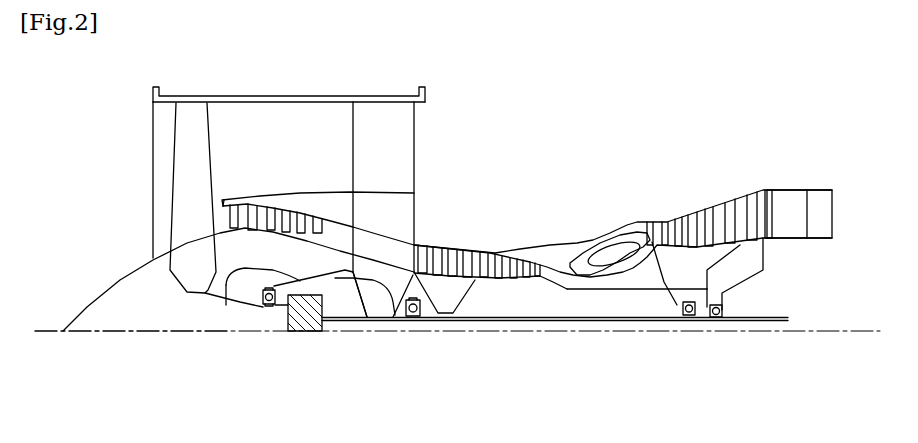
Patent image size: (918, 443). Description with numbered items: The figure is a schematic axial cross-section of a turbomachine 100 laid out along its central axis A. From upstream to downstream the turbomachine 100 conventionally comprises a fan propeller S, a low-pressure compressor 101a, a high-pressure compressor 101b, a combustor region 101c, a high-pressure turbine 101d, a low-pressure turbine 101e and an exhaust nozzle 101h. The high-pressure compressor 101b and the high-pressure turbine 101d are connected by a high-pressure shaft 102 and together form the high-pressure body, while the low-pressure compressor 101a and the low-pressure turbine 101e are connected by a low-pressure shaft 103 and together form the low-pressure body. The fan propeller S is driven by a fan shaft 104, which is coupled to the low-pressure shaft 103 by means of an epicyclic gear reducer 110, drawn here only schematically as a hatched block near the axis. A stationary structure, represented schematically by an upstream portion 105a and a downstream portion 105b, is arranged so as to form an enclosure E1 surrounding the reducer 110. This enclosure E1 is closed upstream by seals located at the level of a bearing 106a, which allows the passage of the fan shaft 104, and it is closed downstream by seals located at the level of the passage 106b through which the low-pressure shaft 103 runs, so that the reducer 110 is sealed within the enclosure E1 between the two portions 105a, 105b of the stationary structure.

The turbomachine 100 is at (525, 168).
The central axis A is at (47, 333).
The fan propeller S is at (187, 152).
The low-pressure compressor 101a is at (247, 197).
The high-pressure compressor 101b is at (447, 247).
The combustor 101c is at (603, 253).
The high-pressure turbine 101d is at (643, 222).
The low-pressure turbine 101e is at (765, 203).
The exhaust nozzle 101h is at (820, 210).
The high-pressure shaft 102 is at (597, 290).
The low-pressure shaft 103 is at (510, 321).
The fan shaft 104 is at (250, 308).
The upstream portion 105a is at (228, 306).
The downstream portion 105b is at (398, 318).
The bearing 106a is at (268, 305).
The passage 106b is at (370, 308).
The epicyclic gear reducer 110 is at (300, 312).
The enclosure E1 is at (343, 320).